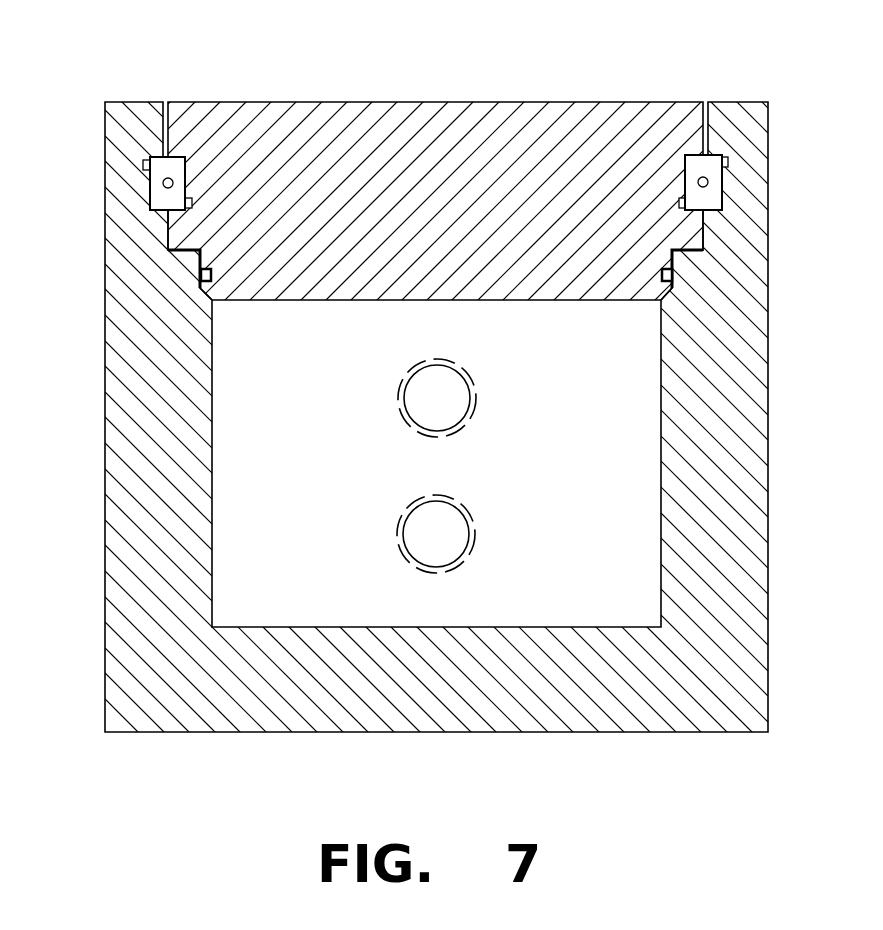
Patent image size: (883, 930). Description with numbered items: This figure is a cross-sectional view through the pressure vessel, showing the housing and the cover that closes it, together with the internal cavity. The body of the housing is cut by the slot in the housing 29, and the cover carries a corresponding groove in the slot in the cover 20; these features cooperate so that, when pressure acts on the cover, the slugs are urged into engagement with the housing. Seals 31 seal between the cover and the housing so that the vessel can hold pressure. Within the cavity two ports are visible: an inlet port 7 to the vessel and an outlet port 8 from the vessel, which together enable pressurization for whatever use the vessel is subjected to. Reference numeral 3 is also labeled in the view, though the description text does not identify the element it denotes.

The clamping element 3 is at (160, 167).
The inlet port 7 is at (432, 393).
The outlet port 8 is at (442, 533).
The groove in the slot in the cover 20 is at (238, 145).
The slot in the housing 29 is at (147, 160).
The seals 31 is at (668, 272).